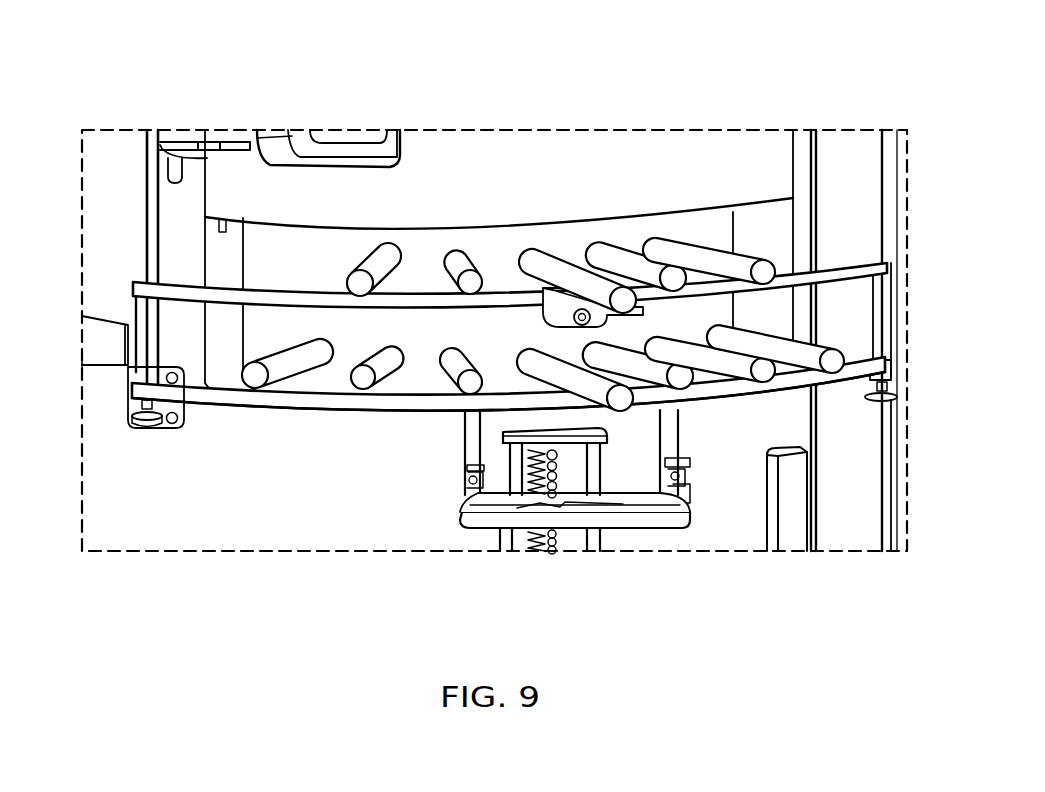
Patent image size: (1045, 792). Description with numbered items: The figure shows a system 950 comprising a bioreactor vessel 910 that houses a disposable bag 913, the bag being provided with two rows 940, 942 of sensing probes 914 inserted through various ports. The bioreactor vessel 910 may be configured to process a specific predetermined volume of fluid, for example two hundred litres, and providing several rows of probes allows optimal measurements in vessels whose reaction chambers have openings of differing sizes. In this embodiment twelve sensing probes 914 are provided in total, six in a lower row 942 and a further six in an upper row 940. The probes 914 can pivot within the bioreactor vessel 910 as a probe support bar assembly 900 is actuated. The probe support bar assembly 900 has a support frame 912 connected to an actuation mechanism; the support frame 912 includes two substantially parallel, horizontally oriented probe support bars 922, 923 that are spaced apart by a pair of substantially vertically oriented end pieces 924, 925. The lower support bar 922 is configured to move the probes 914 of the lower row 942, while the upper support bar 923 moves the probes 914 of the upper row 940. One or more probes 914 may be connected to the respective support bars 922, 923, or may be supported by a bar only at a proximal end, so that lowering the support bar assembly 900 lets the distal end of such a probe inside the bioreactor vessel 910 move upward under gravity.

The probe support bar assembly 900 is at (520, 576).
The bioreactor vessel 910 is at (110, 148).
The support frame 912 is at (282, 430).
The disposable bag 913 is at (427, 238).
The sensing probes 914 is at (856, 311).
The lower support bar 922 is at (786, 391).
The upper support bar 923 is at (147, 282).
The end piece 924 is at (878, 348).
The end piece 925 is at (128, 383).
The upper row 940 is at (332, 270).
The lower row 942 is at (368, 339).
The system 950 is at (860, 95).